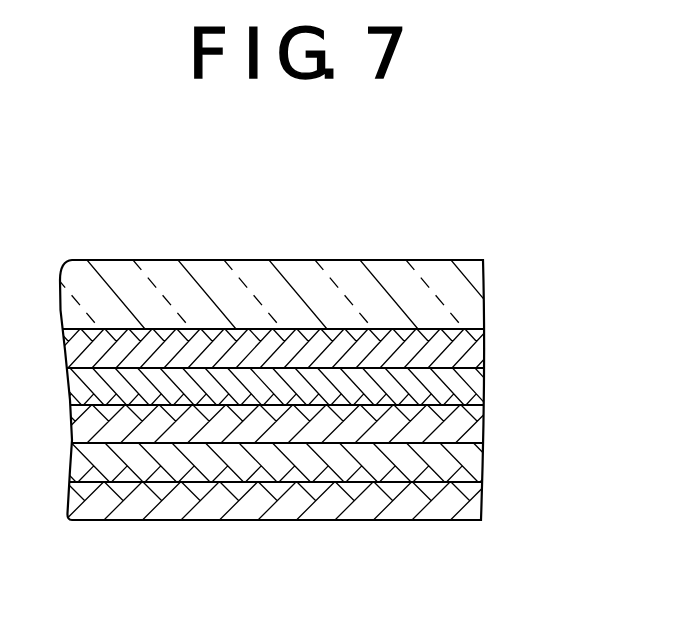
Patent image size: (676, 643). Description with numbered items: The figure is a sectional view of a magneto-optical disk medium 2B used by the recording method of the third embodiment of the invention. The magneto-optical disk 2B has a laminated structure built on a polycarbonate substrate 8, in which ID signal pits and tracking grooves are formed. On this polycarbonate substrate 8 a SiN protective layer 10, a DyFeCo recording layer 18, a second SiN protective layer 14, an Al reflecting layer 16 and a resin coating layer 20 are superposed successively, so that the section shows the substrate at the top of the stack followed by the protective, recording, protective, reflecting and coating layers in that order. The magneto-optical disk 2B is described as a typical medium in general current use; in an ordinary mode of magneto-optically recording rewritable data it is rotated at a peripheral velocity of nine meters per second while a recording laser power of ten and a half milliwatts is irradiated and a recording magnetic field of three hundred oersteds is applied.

The magneto-optical disk medium 2B is at (302, 262).
The polycarbonate substrate 8 is at (481, 289).
The SiN protective layer 10 is at (478, 345).
The DyFeCo recording layer 18 is at (478, 386).
The SiN protective layer 14 is at (478, 424).
The Al reflecting layer 16 is at (475, 465).
The resin coating layer 20 is at (481, 502).